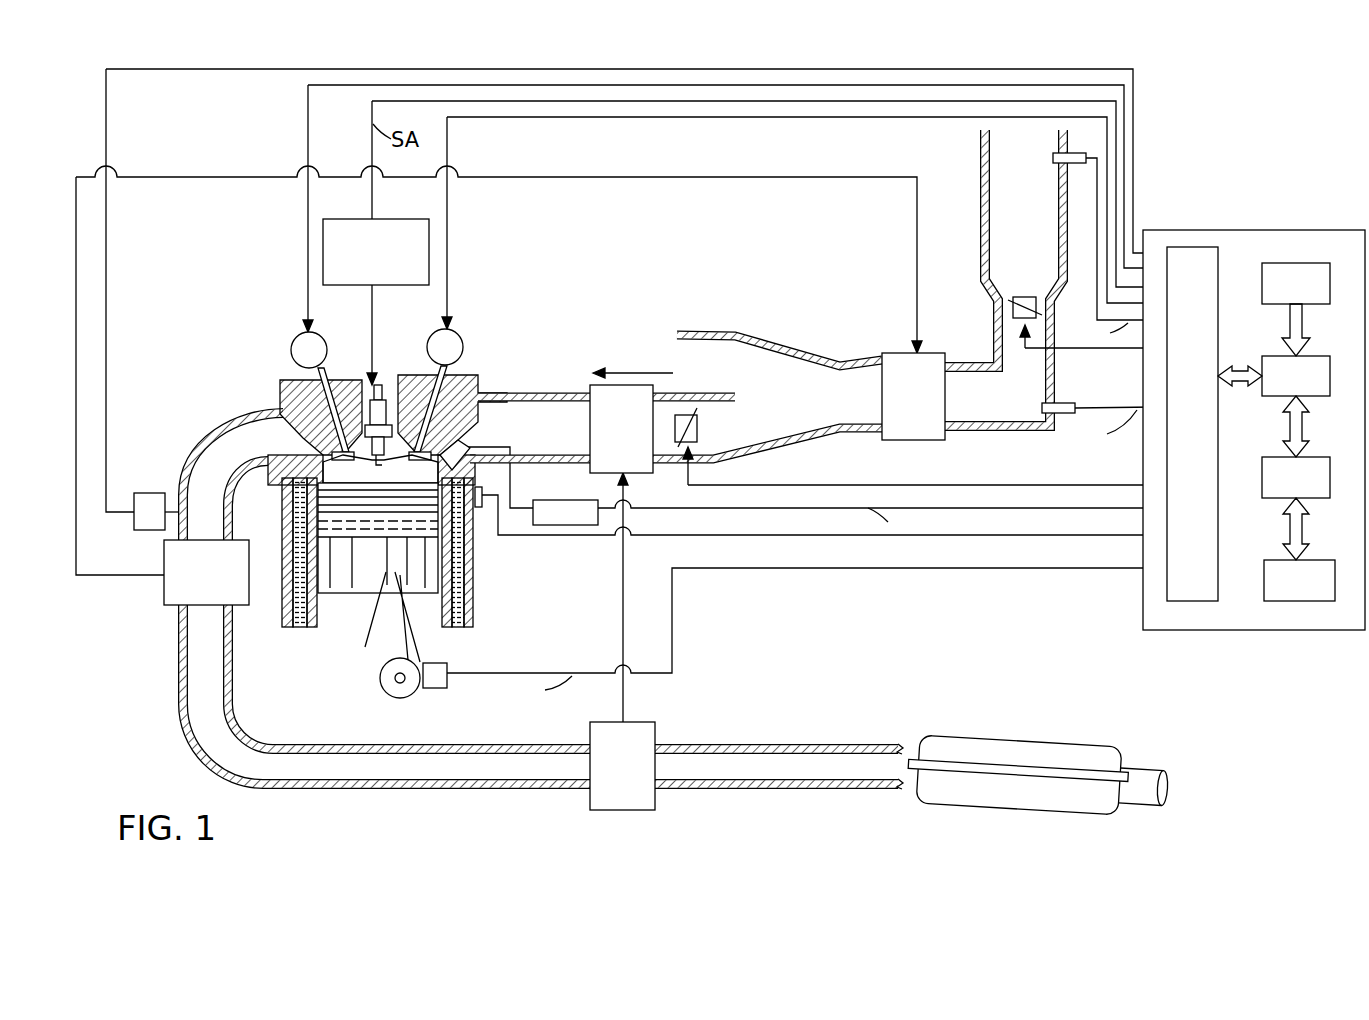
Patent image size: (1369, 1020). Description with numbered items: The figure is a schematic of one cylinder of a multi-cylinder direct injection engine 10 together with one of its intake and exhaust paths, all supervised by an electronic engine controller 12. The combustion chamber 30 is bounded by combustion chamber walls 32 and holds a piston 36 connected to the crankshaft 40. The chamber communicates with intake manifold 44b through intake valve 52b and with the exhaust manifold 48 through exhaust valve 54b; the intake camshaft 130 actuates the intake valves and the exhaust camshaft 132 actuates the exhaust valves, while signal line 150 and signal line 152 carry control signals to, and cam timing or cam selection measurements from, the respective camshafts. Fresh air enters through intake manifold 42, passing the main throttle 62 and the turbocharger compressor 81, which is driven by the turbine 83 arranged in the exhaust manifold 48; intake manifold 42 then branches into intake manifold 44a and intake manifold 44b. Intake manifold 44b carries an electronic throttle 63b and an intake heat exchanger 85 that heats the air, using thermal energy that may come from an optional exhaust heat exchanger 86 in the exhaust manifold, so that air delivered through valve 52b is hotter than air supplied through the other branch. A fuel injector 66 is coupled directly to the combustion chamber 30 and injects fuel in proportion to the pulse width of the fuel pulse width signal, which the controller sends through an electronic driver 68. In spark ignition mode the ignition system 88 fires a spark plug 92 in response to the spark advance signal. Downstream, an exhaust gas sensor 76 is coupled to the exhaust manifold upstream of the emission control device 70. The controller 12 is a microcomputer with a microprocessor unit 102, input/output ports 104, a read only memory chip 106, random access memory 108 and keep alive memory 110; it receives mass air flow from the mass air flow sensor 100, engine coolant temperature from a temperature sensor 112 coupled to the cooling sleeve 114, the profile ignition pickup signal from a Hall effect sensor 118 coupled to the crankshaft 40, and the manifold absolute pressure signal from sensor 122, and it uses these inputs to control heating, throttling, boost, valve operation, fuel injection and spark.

The engine 10 is at (246, 326).
The electronic engine controller 12 is at (1254, 410).
The combustion chamber 30 is at (377, 477).
The combustion chamber walls 32 is at (314, 618).
The piston 36 is at (380, 578).
The crankshaft 40 is at (392, 700).
The intake manifold 42 is at (1004, 278).
The intake manifold 44a is at (606, 372).
The intake manifold 44b is at (676, 397).
The exhaust manifold 48 is at (543, 601).
The intake valve 52b is at (477, 400).
The exhaust valve 54b is at (317, 437).
The main throttle 62 is at (1022, 292).
The electronic throttle 63b is at (725, 455).
The fuel injector 66 is at (470, 525).
The electronic driver 68 is at (850, 517).
The emission control device 70 is at (1092, 745).
The exhaust gas sensor 76 is at (156, 511).
The compressor 81 is at (913, 396).
The turbine 83 is at (206, 572).
The intake heat exchanger 85 is at (621, 429).
The exhaust heat exchanger 86 is at (622, 766).
The ignition system 88 is at (362, 217).
The spark plug 92 is at (390, 380).
The mass air flow sensor 100 is at (1057, 155).
The microprocessor unit 102 is at (1294, 356).
The input/output ports 104 is at (1220, 262).
The read only memory chip 106 is at (1292, 263).
The random access memory 108 is at (1294, 457).
The keep alive memory 110 is at (1294, 560).
The temperature sensor 112 is at (821, 527).
The cooling sleeve 114 is at (462, 578).
The Hall effect sensor 118 is at (437, 692).
The manifold pressure sensor 122 is at (1074, 430).
The intake camshaft 130 is at (463, 340).
The exhaust camshaft 132 is at (293, 340).
The signal line 150 is at (449, 250).
The signal line 152 is at (306, 258).